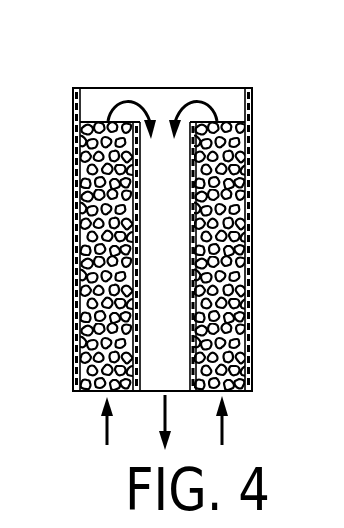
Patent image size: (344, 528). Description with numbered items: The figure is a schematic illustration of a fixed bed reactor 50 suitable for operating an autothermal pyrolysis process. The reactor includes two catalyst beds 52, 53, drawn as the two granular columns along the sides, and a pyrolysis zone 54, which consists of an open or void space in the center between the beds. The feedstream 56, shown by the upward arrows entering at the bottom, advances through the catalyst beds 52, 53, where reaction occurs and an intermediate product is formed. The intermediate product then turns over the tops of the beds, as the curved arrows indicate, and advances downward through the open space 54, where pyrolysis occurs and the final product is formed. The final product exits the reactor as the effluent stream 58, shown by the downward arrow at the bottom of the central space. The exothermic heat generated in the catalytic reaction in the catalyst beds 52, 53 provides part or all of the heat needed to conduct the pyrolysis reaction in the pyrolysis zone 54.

The fixed bed reactor 50 is at (252, 173).
The catalyst bed 52 is at (218, 213).
The catalyst bed 53 is at (73, 179).
The pyrolysis zone 54 is at (168, 296).
The feedstream 56 is at (107, 428).
The effluent stream 58 is at (167, 417).